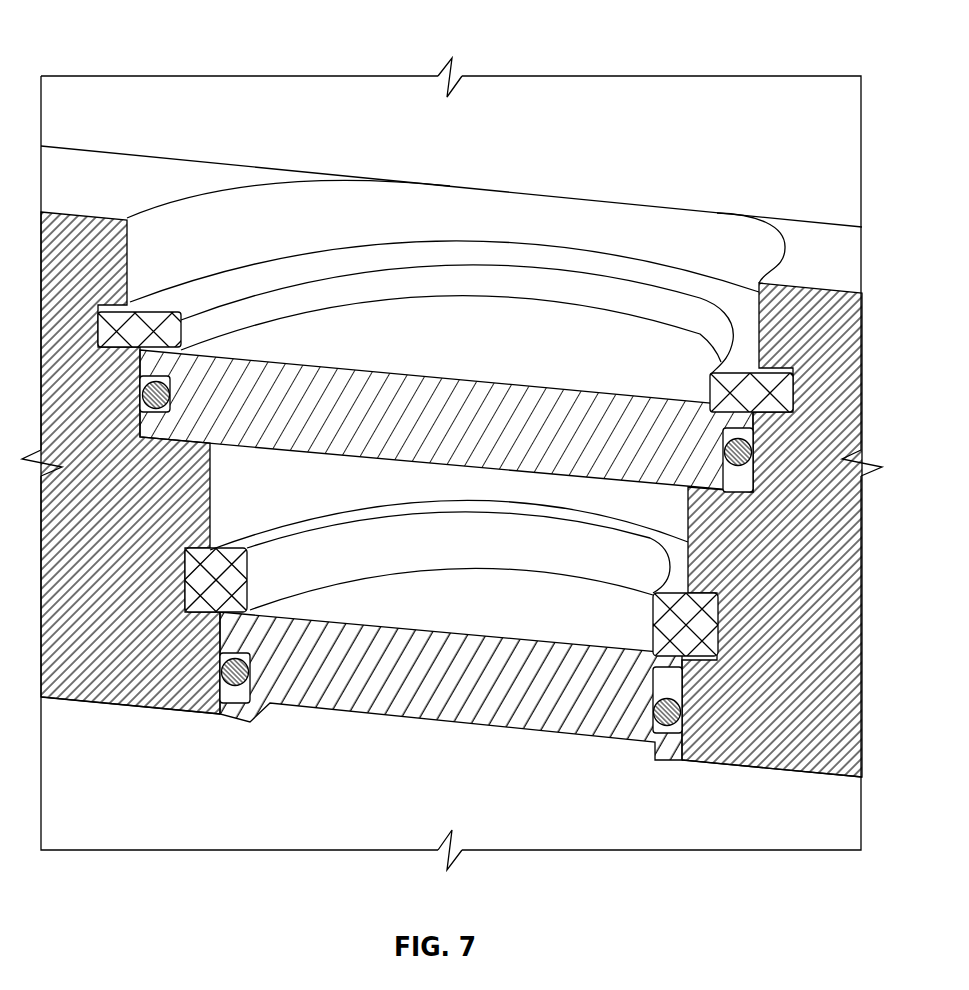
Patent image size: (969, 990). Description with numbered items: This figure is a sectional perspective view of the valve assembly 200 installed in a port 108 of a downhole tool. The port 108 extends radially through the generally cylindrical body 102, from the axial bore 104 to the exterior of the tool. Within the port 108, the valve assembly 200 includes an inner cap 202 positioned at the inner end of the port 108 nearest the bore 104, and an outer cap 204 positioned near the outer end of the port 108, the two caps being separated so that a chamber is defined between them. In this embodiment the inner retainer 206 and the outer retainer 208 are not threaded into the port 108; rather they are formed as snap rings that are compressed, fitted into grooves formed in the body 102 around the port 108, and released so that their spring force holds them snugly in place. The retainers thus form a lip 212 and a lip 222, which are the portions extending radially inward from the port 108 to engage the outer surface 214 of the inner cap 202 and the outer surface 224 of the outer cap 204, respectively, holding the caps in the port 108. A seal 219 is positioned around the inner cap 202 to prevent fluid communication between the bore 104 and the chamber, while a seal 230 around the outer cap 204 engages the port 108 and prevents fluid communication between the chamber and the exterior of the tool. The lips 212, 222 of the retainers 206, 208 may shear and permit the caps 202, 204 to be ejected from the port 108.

The valve assembly 200 is at (807, 53).
The body 102 is at (842, 603).
The bore 104 is at (822, 822).
The port 108 is at (727, 215).
The outer retainer 208 is at (570, 270).
The lip 222 is at (212, 289).
The outer surface 224 is at (577, 390).
The outer cap 204 is at (447, 400).
The seal 230 is at (757, 463).
The lip 212 is at (260, 537).
The inner retainer 206 is at (703, 593).
The inner cap 202 is at (545, 665).
The outer surface 214 is at (453, 630).
The seal 219 is at (660, 737).